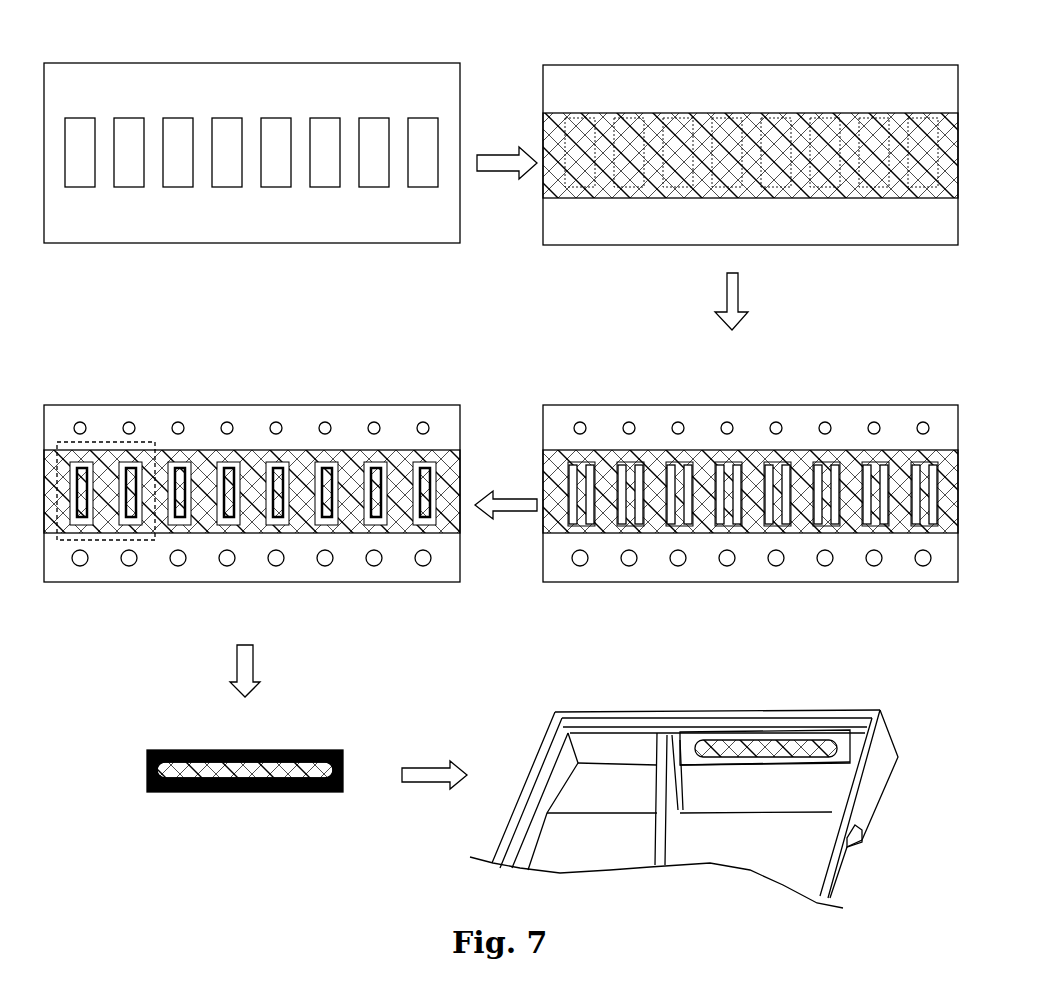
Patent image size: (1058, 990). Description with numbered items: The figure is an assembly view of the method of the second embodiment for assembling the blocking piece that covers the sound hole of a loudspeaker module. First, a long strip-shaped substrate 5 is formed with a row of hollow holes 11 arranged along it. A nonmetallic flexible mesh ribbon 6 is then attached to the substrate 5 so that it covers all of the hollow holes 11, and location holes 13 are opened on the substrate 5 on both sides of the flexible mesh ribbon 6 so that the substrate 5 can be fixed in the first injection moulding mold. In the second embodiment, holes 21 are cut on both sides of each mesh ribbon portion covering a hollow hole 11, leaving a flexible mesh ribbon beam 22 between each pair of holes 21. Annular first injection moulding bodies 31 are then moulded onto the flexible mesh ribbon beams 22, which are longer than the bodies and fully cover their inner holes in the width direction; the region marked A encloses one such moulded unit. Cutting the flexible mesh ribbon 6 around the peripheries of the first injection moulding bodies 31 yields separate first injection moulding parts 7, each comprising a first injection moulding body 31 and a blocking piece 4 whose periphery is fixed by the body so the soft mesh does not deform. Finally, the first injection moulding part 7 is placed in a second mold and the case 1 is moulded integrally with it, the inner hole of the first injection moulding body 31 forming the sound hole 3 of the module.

The case 1 is at (647, 723).
The sound hole 3 is at (778, 735).
The blocking piece 4 is at (268, 790).
The substrate 5 is at (165, 83).
The flexible mesh ribbon 6 is at (753, 117).
The first injection moulding part 7 is at (233, 771).
The hollow hole 11 is at (228, 138).
The location hole 13 is at (772, 430).
The hole 21 is at (823, 457).
The flexible mesh ribbon beam 22 is at (877, 460).
The first injection moulding body 31 is at (327, 463).
The enlarged region A is at (103, 442).